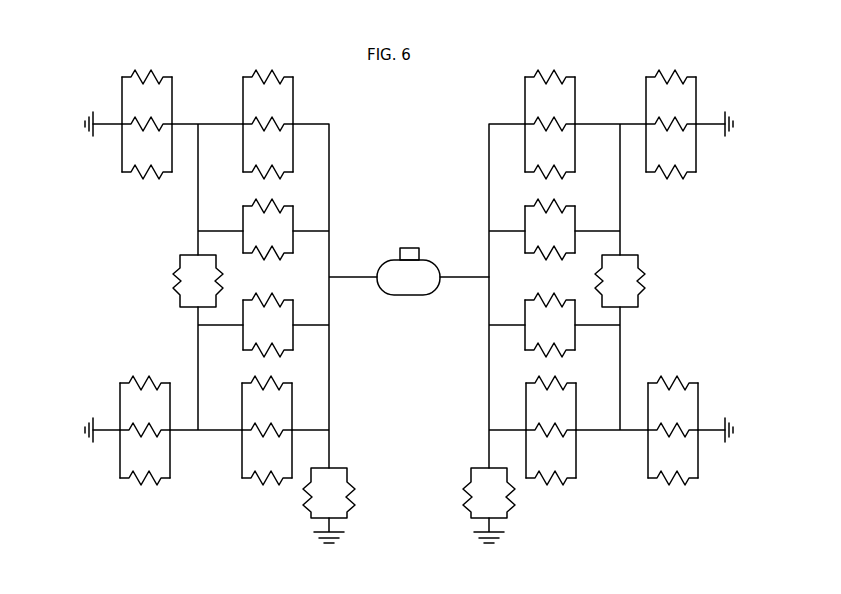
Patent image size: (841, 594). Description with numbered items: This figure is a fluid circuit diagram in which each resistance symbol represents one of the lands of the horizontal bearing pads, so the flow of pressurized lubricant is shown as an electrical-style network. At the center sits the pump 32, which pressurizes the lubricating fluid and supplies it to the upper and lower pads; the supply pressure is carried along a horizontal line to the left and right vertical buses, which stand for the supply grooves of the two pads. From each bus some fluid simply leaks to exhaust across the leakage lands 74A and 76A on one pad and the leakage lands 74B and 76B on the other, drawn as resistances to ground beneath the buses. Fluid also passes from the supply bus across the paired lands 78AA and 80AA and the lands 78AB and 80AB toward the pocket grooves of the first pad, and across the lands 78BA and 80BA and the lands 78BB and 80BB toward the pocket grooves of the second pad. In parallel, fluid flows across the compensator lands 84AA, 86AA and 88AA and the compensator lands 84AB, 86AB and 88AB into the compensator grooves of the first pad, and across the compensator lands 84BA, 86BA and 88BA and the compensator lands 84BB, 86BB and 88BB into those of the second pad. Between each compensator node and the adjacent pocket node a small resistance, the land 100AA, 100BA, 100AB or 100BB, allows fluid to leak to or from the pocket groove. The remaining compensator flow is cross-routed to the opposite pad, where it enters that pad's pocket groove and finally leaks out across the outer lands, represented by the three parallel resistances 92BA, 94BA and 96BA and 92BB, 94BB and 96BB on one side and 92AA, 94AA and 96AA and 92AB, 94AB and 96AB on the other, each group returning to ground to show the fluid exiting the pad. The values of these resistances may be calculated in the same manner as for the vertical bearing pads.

The pump 32 is at (393, 277).
The leakage land 74A is at (302, 497).
The leakage land 74B is at (357, 494).
The leakage land 76A is at (461, 494).
The leakage land 76B is at (516, 497).
The land 78AA is at (278, 310).
The land 78BA is at (268, 197).
The land 78AB is at (540, 310).
The land 78BB is at (548, 197).
The land 80AA is at (280, 353).
The land 80BA is at (272, 262).
The land 80AB is at (538, 353).
The land 80BB is at (546, 262).
The compensator land 84AA is at (270, 68).
The compensator land 84BA is at (283, 376).
The compensator land 84AB is at (550, 68).
The compensator land 84BB is at (535, 376).
The compensator land 86AA is at (272, 113).
The compensator land 86BA is at (257, 438).
The compensator land 86AB is at (546, 113).
The compensator land 86BB is at (561, 438).
The compensator land 88AA is at (265, 160).
The compensator land 88BA is at (267, 486).
The compensator land 88AB is at (553, 160).
The compensator land 88BB is at (551, 486).
The land 92AA is at (144, 378).
The land 92BA is at (149, 68).
The land 92AB is at (674, 378).
The land 92BB is at (669, 68).
The land 94AA is at (145, 424).
The land 94BA is at (155, 135).
The land 94AB is at (673, 424).
The land 94BB is at (663, 135).
The land 96AA is at (150, 484).
The land 96BA is at (152, 180).
The land 96AB is at (668, 484).
The land 96BB is at (666, 180).
The land 100AA is at (173, 290).
The land 100BA is at (226, 283).
The land 100AB is at (592, 283).
The land 100BB is at (645, 290).